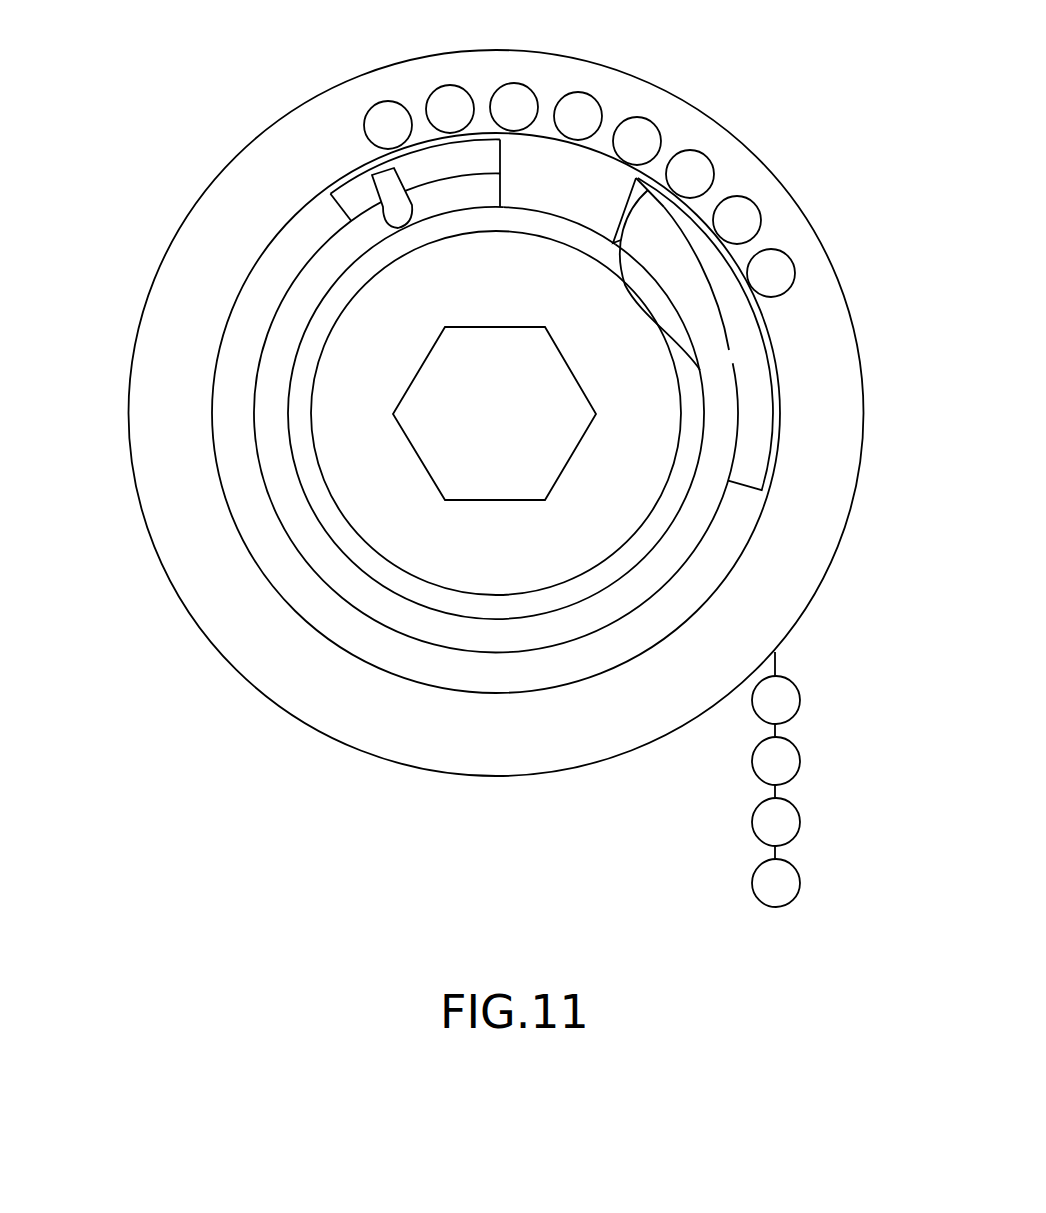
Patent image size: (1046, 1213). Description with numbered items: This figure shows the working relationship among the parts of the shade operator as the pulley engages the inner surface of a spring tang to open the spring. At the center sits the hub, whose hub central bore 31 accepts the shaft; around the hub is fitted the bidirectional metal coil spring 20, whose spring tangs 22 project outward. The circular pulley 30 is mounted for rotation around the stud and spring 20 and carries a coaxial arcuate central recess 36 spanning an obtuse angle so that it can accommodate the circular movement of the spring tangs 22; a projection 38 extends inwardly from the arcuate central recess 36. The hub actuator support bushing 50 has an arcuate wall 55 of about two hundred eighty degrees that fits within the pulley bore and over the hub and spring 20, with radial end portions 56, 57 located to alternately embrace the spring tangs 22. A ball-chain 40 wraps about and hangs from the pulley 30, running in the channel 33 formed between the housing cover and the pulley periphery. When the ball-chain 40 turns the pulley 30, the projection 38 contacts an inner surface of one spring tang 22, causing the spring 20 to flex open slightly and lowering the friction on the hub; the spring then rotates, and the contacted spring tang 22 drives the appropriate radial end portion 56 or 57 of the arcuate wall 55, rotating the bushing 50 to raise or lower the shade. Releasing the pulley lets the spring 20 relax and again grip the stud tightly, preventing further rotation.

The bidirectional metal coil spring 20 is at (282, 388).
The spring tangs 22 is at (377, 158).
The circular pulley 30 is at (757, 222).
The hub central bore 31 is at (510, 477).
The channel 33 is at (782, 277).
The arcuate central recess 36 is at (441, 148).
The projection 38 is at (560, 160).
The ball-chain 40 is at (800, 700).
The hub actuator support bushing 50 is at (353, 366).
The arcuate wall 55 is at (300, 297).
The radial end portion 56 is at (692, 298).
The radial end portion 57 is at (375, 222).